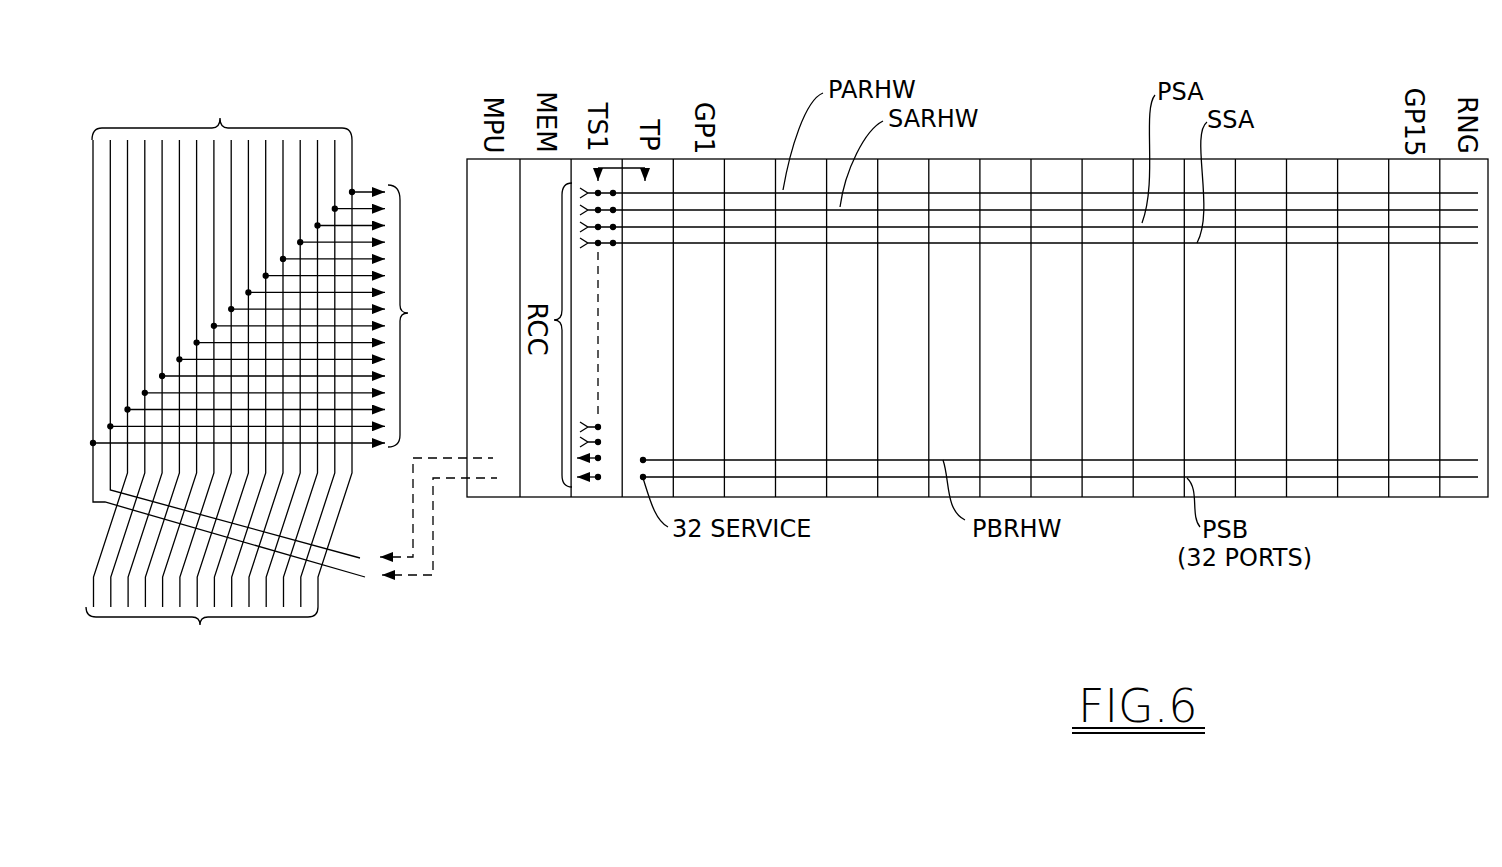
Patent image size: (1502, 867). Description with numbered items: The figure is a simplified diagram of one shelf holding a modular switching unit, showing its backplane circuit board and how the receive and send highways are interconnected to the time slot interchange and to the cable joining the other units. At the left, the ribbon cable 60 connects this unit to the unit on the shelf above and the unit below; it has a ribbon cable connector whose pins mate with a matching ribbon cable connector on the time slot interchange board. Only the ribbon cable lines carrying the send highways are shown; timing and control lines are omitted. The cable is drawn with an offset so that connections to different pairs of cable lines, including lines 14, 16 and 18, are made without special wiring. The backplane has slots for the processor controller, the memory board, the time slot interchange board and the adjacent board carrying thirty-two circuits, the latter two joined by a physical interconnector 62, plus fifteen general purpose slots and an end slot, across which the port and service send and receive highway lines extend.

The bus to MSU N-1 14 is at (323, 515).
The crossbar bus lines 16 is at (323, 148).
The bus link line 18 is at (337, 547).
The ribbon cable 60 is at (372, 153).
The physical interconnector 62 is at (613, 168).